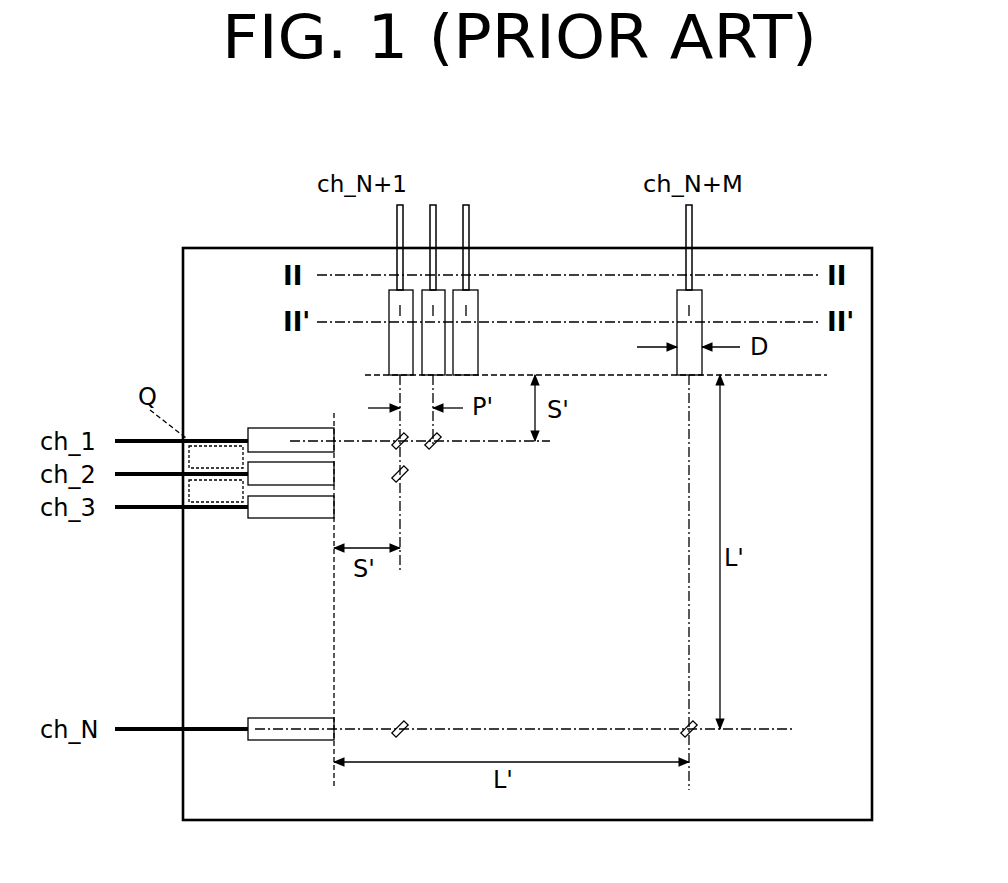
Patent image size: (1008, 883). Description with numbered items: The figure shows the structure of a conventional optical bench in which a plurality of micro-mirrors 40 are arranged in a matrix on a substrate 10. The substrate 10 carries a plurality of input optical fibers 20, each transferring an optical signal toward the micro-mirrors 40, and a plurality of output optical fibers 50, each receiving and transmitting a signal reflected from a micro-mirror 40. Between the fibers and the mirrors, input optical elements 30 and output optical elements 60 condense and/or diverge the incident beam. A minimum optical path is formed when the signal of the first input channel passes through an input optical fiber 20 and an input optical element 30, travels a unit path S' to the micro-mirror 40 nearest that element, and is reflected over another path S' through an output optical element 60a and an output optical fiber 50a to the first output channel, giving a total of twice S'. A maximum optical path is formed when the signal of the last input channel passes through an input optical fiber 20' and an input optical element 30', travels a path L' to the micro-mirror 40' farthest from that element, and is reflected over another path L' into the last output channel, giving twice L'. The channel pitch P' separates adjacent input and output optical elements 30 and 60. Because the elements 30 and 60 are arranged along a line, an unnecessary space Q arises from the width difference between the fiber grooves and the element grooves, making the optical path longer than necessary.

The substrate 10 is at (233, 255).
The input optical fibers 20 is at (181, 439).
The input optical fiber 20' is at (181, 695).
The input optical elements 30 is at (291, 444).
The input optical element 30' is at (291, 696).
The micro-mirrors 40 is at (432, 477).
The micro-mirror 40' is at (544, 702).
The output optical fibers 50 is at (469, 212).
The output optical fiber 50a is at (396, 240).
The output optical elements 60 is at (476, 315).
The output optical element 60a is at (388, 328).